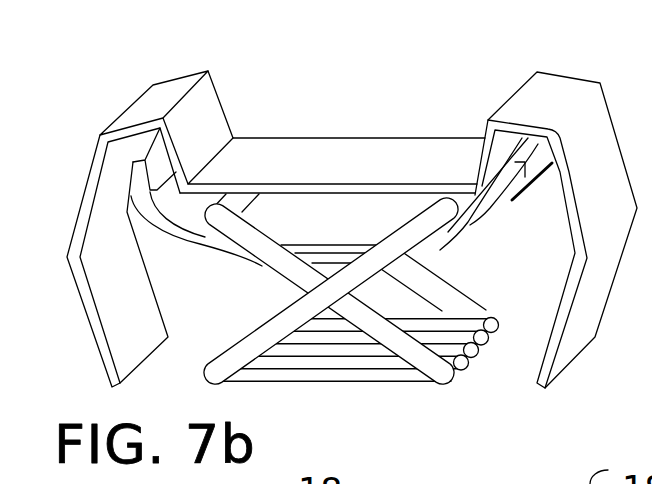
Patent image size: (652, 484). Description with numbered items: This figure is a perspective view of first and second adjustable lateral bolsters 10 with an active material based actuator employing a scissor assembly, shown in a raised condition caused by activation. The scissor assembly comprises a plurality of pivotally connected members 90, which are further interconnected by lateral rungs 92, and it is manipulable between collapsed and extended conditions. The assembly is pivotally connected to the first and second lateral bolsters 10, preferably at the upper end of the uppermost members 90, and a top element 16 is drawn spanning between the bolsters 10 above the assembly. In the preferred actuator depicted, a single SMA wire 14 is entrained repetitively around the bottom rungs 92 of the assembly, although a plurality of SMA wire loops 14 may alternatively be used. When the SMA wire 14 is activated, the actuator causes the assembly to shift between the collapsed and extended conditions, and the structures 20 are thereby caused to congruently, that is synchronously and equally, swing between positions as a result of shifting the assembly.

The lateral bolster 10 is at (121, 66).
The SMA wire 14 is at (323, 383).
The seat 16 is at (354, 157).
The structure 20 is at (160, 201).
The pivotally connected member 90 is at (366, 314).
The lateral rung 92 is at (470, 225).